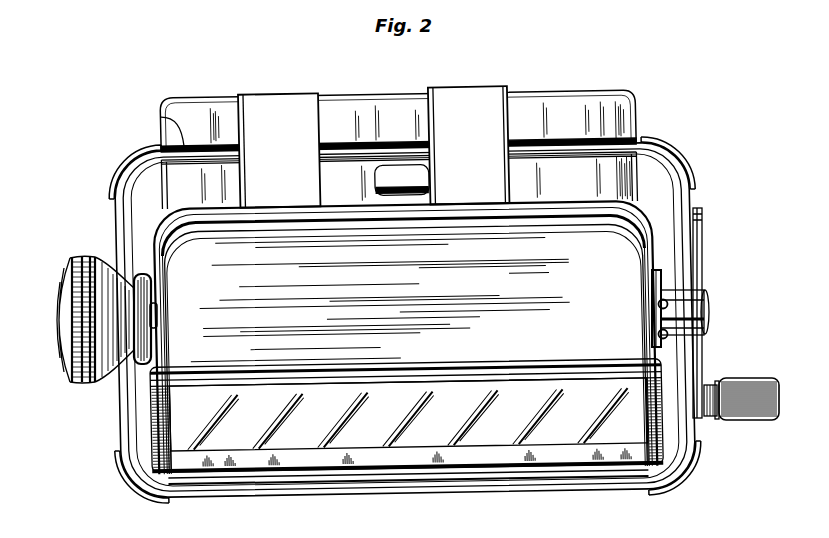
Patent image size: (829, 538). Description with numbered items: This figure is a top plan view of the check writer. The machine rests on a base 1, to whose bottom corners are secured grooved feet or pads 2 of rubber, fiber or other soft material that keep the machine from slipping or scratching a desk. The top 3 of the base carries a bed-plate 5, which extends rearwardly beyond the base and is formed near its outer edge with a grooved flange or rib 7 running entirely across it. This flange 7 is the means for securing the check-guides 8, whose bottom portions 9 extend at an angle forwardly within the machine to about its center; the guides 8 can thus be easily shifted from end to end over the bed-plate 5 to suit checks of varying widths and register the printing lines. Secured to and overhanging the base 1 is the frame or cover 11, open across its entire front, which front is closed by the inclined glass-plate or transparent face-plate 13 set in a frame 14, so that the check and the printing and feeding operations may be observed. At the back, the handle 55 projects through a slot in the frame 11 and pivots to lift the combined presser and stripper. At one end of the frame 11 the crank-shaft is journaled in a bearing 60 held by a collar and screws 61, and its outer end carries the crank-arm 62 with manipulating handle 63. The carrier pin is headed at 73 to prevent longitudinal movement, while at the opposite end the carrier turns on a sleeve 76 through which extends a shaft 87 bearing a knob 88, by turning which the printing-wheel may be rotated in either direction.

The base 1 is at (314, 492).
The grooved feet or pads 2 is at (128, 157).
The top of the base 3 is at (42, 322).
The bed-plate 5 is at (248, 509).
The flange or rib 7 is at (165, 113).
The check-guides 8 is at (243, 96).
The bottom portions of the guides 9 is at (374, 147).
The frame or cover 11 is at (405, 337).
The glass-plate or transparent face-plate 13 is at (411, 397).
The frame for the face-plate 14 is at (406, 401).
The handle 55 is at (430, 180).
The bearing 60 is at (680, 305).
The screws 61 is at (668, 336).
The crank-arm 62 is at (703, 366).
The manipulating handle 63 is at (742, 421).
The head of the pin 73 is at (663, 303).
The sleeve 76 is at (156, 338).
The shaft 87 is at (158, 306).
The knob 88 is at (84, 383).